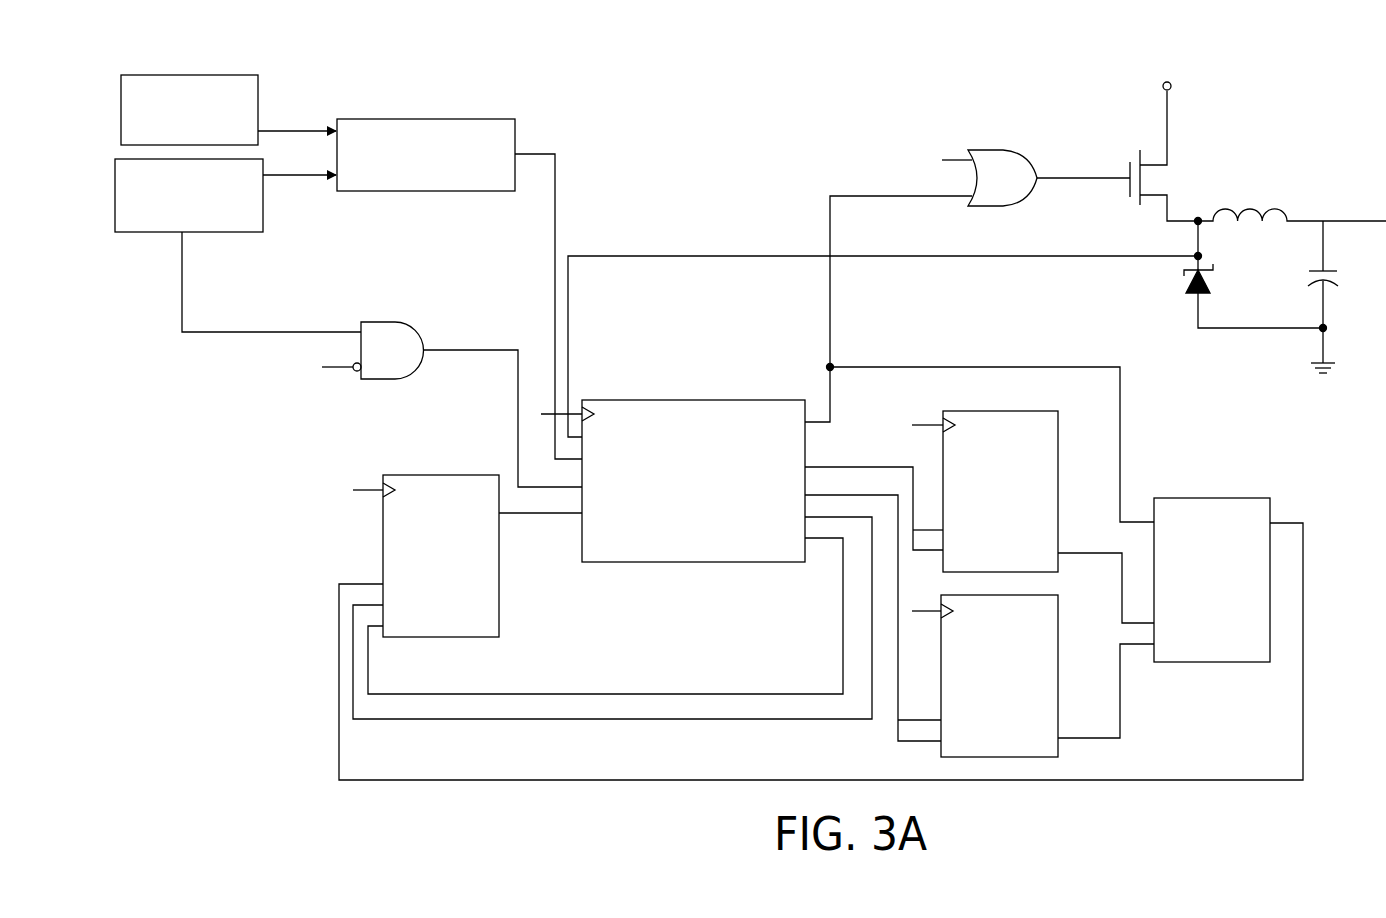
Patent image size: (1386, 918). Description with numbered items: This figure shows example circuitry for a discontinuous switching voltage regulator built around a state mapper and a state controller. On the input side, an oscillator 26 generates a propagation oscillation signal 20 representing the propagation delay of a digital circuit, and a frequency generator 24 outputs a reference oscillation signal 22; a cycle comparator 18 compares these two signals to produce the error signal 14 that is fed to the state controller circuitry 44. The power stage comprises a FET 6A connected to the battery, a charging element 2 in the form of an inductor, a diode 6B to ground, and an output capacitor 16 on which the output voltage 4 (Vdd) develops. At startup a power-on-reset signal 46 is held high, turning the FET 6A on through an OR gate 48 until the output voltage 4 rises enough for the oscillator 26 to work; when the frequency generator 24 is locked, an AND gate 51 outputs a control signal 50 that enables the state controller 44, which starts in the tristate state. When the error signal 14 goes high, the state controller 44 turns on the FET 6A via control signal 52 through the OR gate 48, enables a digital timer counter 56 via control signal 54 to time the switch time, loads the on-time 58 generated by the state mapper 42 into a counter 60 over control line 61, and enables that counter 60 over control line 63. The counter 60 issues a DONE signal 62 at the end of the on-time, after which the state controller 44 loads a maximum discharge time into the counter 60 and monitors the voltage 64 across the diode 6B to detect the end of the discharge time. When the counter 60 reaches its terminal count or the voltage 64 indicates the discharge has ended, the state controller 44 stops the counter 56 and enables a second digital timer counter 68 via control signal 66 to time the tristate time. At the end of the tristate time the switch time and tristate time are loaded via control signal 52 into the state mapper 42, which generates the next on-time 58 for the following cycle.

The charging element 2 is at (1250, 204).
The output voltage 4 is at (1350, 232).
The FET 6A is at (1118, 148).
The diode 6B is at (1223, 288).
The error signal 14 is at (533, 154).
The capacitor 16 is at (1341, 277).
The cycle comparator 18 is at (413, 119).
The propagation oscillation signal 20 is at (274, 134).
The reference oscillation signal 22 is at (281, 177).
The frequency generator 24 is at (264, 218).
The oscillator 26 is at (259, 82).
The state mapper circuitry 42 is at (1202, 498).
The state controller circuitry 44 is at (691, 563).
The power-on-reset (POR) signal 46 is at (342, 372).
The OR gate 48 is at (991, 151).
The control signal 50 is at (461, 350).
The AND gate 51 is at (386, 321).
The control signal 52 is at (892, 200).
The control signal 54 is at (856, 465).
The digital timer (counter) 56 is at (1058, 434).
The on-time 58 is at (1303, 603).
The counter 60 is at (499, 626).
The control line 61 is at (842, 604).
The DONE signal 62 is at (518, 517).
The control line 63 is at (684, 720).
The voltage across the diode 64 is at (1025, 258).
The control signal 66 is at (898, 632).
The digital timer (counter) 68 is at (1058, 621).